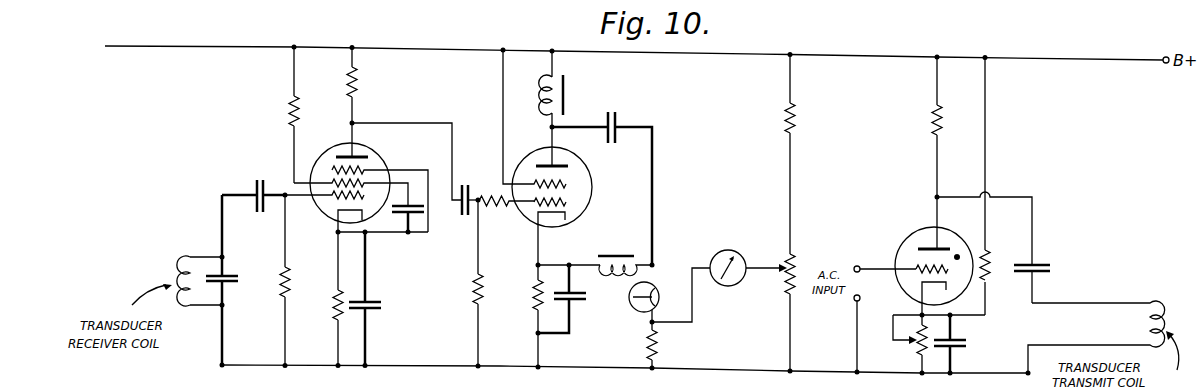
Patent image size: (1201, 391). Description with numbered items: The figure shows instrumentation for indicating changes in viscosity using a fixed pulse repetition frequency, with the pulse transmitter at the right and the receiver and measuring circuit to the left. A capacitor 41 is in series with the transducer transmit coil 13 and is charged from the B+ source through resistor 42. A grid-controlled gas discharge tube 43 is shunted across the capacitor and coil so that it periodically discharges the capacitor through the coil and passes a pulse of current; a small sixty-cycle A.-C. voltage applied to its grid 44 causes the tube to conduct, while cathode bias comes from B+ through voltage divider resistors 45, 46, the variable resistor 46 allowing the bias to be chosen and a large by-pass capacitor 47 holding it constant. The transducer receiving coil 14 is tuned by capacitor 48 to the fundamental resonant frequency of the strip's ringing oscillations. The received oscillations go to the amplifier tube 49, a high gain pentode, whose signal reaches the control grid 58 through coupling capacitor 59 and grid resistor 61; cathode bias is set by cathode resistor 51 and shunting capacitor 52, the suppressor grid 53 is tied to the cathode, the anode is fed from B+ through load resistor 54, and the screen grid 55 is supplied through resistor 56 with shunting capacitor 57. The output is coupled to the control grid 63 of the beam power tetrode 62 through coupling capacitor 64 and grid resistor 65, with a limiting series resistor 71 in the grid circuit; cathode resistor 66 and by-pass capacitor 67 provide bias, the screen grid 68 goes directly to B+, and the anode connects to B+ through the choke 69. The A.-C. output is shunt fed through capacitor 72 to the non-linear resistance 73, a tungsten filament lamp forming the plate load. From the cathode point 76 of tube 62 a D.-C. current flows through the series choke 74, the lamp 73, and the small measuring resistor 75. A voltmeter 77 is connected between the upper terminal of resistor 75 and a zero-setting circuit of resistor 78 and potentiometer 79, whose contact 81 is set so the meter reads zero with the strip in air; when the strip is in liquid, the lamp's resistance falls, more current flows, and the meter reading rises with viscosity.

The transducer transmit coil 13 is at (1146, 318).
The transducer receiving coil 14 is at (180, 266).
The capacitor 41 is at (1040, 262).
The resistor 42 is at (930, 120).
The grid-controlled gas discharge tube 43 is at (909, 236).
The grid 44 is at (914, 272).
The voltage divider resistor 45 is at (989, 272).
The voltage divider resistor 46 is at (916, 352).
The by-pass capacitor 47 is at (964, 341).
The capacitor 48 is at (230, 276).
The amplifier tube 49 is at (383, 160).
The cathode resistor 51 is at (336, 290).
The shunting capacitor 52 is at (378, 303).
The suppressor grid 53 is at (335, 168).
The load resistor 54 is at (360, 89).
The screen grid 55 is at (334, 175).
The resistor 56 is at (290, 117).
The shunting capacitor 57 is at (405, 225).
The control grid 58 is at (335, 210).
The coupling capacitor 59 is at (255, 188).
The grid resistor 61 is at (290, 282).
The electronic tube 62 is at (593, 180).
The control grid 63 is at (574, 202).
The coupling capacitor 64 is at (461, 212).
The grid resistor 65 is at (474, 288).
The cathode resistor 66 is at (534, 283).
The by-pass capacitor 67 is at (580, 300).
The screen grid 68 is at (537, 180).
The choke 69 is at (546, 95).
The limiting series resistor 71 is at (494, 206).
The capacitor 72 is at (618, 122).
The non-linear resistance 73 is at (633, 306).
The series choke 74 is at (634, 256).
The measuring resistor 75 is at (648, 348).
The junction 76 is at (544, 263).
The voltmeter 77 is at (733, 251).
The resistor 78 is at (787, 122).
The potentiometer 79 is at (797, 262).
The contact 81 is at (783, 272).